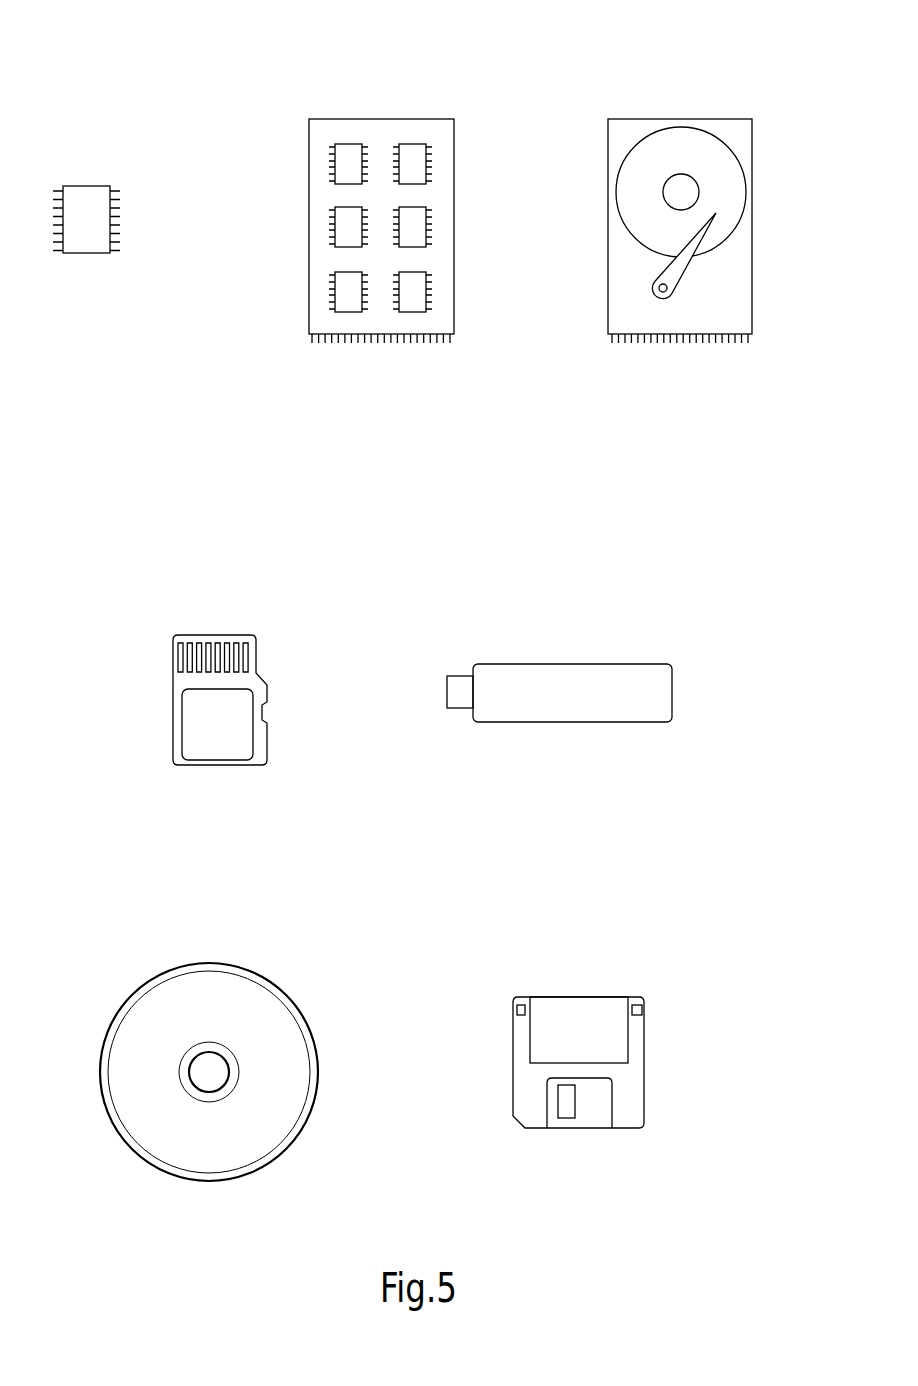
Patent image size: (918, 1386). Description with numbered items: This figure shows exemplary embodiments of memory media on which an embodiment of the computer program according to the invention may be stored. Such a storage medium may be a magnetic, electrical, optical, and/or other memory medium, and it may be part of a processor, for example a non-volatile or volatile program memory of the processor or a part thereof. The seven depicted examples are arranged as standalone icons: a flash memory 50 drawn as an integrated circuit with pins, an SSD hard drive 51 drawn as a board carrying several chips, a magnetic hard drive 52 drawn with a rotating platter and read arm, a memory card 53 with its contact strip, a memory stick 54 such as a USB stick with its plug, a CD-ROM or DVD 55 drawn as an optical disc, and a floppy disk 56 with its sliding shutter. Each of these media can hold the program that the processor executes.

The flash memory 50 is at (113, 145).
The SSD hard drive 51 is at (456, 80).
The magnetic hard drive 52 is at (755, 80).
The memory card 53 is at (258, 600).
The memory stick 54 is at (646, 623).
The CD-ROM or DVD 55 is at (298, 955).
The floppy disk 56 is at (640, 955).